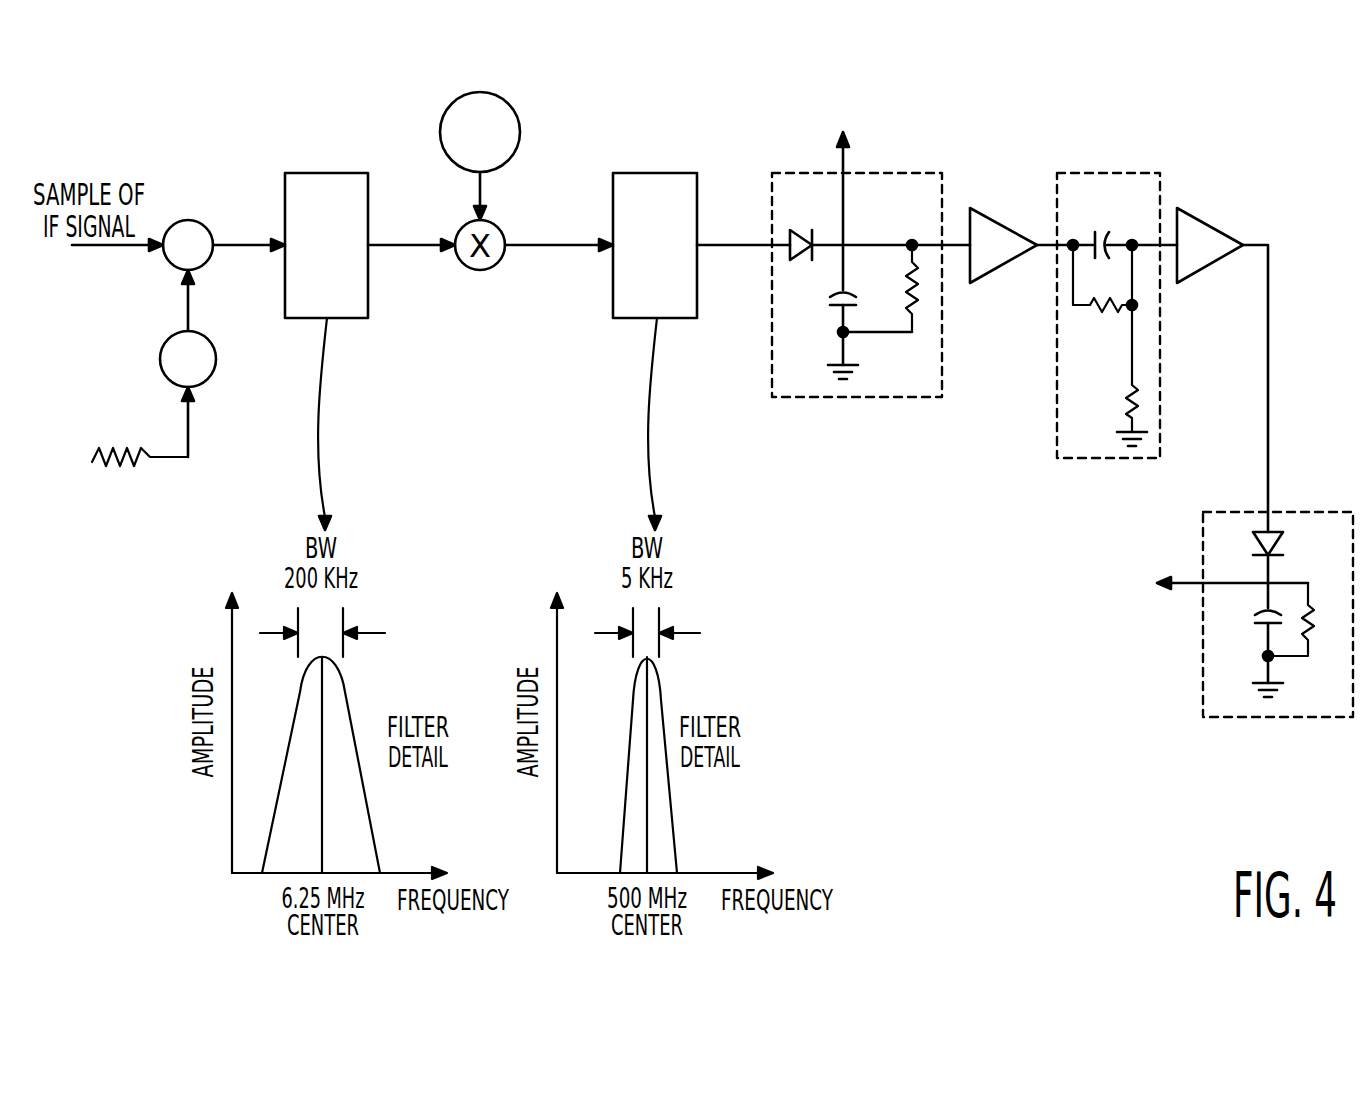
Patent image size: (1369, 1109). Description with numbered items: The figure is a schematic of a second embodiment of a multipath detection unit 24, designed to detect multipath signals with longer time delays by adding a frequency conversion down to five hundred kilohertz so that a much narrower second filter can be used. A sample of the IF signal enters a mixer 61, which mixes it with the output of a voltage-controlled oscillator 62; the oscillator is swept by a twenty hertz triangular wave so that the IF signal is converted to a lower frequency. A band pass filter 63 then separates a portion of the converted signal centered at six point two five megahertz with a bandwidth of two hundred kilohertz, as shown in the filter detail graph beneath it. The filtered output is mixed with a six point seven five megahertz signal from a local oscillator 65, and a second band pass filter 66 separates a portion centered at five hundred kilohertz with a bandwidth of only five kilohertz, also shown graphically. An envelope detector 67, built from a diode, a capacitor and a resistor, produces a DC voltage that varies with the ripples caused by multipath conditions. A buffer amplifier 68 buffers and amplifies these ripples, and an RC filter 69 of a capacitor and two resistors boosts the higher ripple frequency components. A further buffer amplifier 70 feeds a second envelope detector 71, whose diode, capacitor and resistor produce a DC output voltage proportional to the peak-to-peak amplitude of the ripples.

The multipath detection unit 24 is at (1306, 150).
The mixer 61 is at (188, 220).
The voltage-controlled oscillator 62 is at (160, 360).
The band pass filter 63 is at (327, 173).
The local oscillator 65 is at (519, 147).
The band pass filter 66 is at (625, 318).
The envelope detector 67 is at (917, 397).
The buffer amplifier 68 is at (1000, 224).
The RC filter 69 is at (1105, 173).
The buffer amplifier 70 is at (1213, 228).
The envelope detector 71 is at (1320, 512).